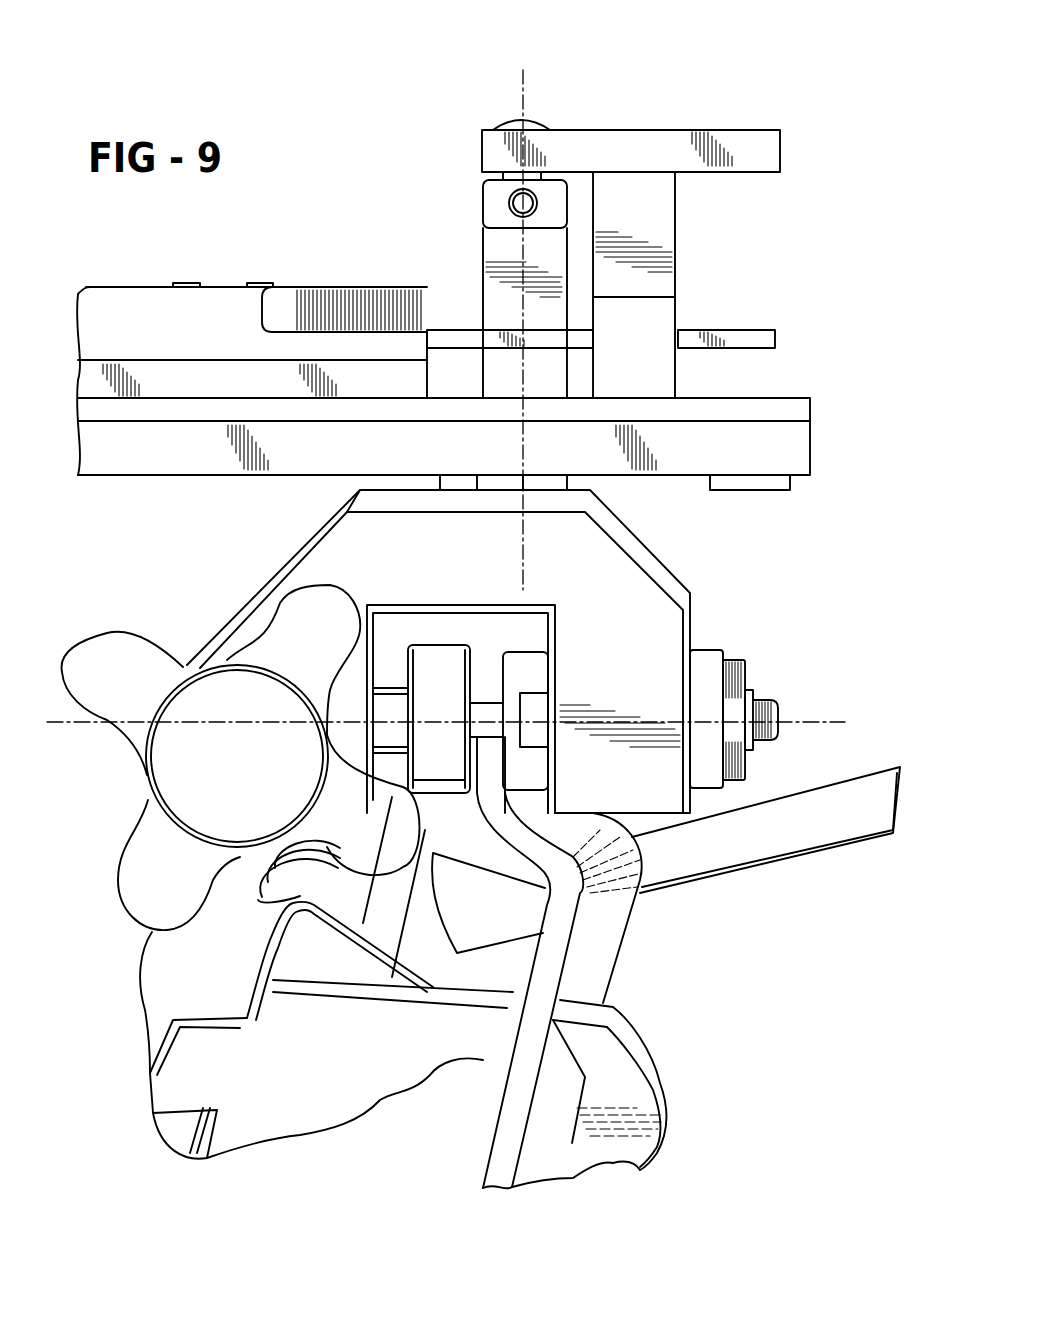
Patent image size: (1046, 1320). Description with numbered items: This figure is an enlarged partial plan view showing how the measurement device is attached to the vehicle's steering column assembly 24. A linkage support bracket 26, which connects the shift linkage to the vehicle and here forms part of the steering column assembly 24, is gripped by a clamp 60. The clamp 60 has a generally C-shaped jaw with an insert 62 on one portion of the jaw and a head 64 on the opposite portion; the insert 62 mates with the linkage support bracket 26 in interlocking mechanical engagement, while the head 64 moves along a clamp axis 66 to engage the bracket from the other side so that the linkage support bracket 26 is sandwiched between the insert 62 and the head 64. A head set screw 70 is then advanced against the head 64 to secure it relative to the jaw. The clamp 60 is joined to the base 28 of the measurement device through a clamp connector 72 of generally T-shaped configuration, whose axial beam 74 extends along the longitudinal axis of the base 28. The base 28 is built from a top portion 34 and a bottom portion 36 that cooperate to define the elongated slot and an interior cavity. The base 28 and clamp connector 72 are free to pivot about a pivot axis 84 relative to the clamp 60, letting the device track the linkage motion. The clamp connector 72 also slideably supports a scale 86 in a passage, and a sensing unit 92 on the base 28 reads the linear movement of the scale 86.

The steering column assembly 24 is at (135, 1044).
The linkage support bracket 26 is at (600, 945).
The base 28 is at (758, 435).
The top portion 34 is at (802, 408).
The bottom portion 36 is at (802, 450).
The clamp 60 is at (645, 572).
The insert 62 is at (538, 672).
The head 64 is at (442, 660).
The clamp axis 66 is at (797, 712).
The head set screw 70 is at (120, 655).
The clamp connector 72 is at (490, 247).
The axial beam 74 is at (656, 142).
The pivot axis 84 is at (533, 88).
The scale 86 is at (696, 330).
The sensing unit 92 is at (224, 286).